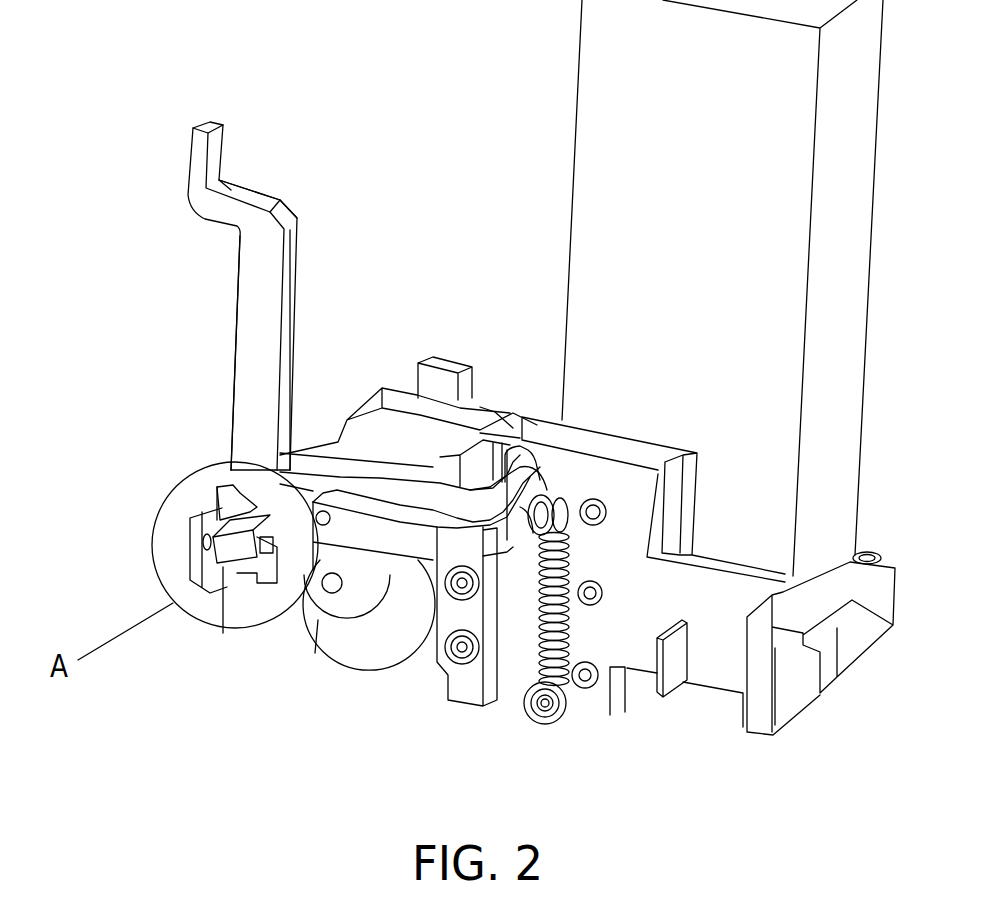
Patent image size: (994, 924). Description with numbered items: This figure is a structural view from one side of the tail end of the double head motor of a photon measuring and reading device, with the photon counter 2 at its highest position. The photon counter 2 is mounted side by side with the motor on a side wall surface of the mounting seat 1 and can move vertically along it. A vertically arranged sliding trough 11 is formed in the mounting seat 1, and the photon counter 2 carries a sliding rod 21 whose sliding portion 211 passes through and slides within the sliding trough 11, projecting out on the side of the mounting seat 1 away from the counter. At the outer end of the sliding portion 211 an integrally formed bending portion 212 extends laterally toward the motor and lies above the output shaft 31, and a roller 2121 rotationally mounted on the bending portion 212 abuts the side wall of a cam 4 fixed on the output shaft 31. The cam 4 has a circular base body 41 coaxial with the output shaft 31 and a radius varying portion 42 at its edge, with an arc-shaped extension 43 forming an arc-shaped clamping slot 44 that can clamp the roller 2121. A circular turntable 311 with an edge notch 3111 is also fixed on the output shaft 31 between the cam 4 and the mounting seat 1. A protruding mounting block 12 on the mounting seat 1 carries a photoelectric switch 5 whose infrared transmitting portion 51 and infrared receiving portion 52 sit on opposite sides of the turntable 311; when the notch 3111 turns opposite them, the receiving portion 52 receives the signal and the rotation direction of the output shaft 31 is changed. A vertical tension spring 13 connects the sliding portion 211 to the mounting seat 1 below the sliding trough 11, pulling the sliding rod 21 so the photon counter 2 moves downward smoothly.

The mounting seat 1 is at (494, 445).
The photon counter 2 is at (838, 288).
The sliding rod 21 is at (160, 347).
The sliding portion 211 is at (520, 490).
The bending portion 212 is at (345, 440).
The roller 2121 is at (300, 478).
The extension 43 is at (330, 508).
The clamping slot 44 is at (316, 517).
The photoelectric switch 5 is at (275, 538).
The infrared receiving portion 52 is at (245, 518).
The mounting block 12 is at (225, 552).
The infrared transmitting portion 51 is at (220, 578).
The notch 3111 is at (247, 585).
The output shaft 31 is at (330, 588).
The base body 41 is at (362, 612).
The turntable 311 is at (315, 653).
The cam 4 is at (360, 610).
The radius varying portion 42 is at (373, 655).
The sliding trough 11 is at (500, 698).
The tension spring 13 is at (508, 677).